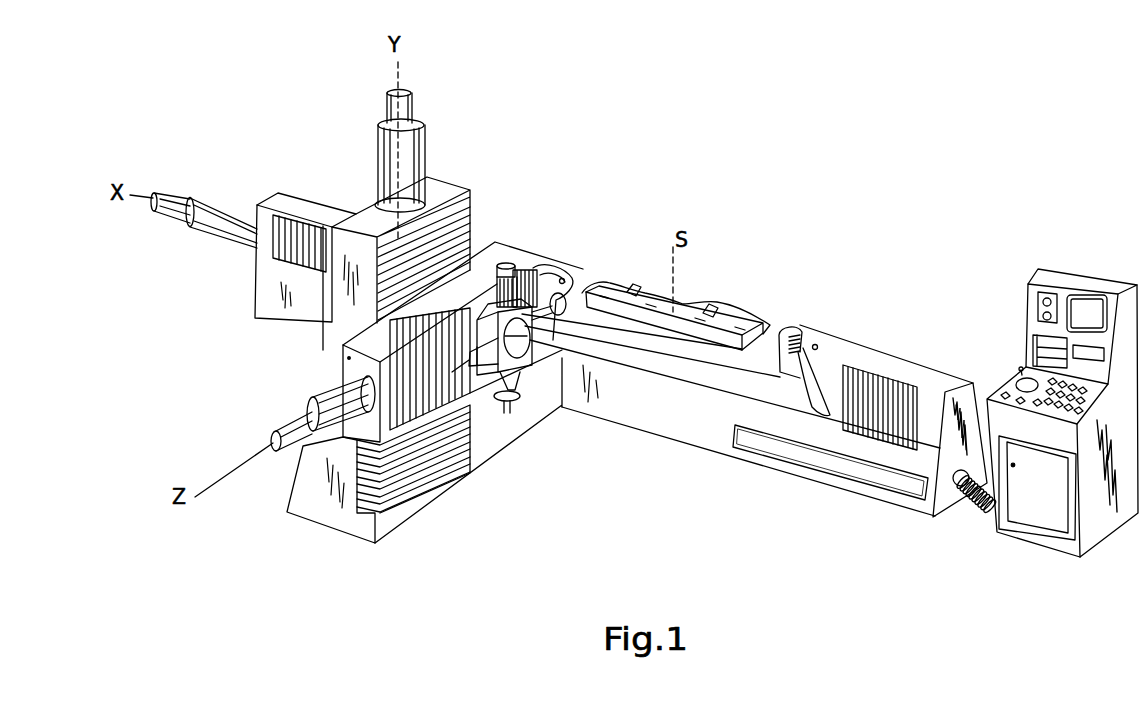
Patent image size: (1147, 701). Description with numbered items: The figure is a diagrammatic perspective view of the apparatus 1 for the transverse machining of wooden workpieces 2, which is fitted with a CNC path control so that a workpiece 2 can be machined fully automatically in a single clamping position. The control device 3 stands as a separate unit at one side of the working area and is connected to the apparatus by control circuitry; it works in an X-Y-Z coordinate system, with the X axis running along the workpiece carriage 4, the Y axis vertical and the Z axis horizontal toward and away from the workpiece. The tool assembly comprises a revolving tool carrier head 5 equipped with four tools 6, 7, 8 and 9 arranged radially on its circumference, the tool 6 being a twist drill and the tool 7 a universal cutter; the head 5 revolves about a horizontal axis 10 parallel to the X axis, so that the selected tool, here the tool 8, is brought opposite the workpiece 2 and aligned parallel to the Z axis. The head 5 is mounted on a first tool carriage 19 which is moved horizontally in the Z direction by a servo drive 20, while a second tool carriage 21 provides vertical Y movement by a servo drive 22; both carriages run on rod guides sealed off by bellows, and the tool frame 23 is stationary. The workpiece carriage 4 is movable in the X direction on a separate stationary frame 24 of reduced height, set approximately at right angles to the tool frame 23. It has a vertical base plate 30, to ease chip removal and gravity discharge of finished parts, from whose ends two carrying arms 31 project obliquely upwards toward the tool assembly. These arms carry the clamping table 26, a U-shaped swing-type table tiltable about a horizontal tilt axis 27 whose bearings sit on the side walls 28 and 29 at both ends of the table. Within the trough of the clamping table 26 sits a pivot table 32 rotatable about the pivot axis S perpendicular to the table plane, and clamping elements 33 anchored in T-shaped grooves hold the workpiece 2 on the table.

The apparatus 1 is at (645, 173).
The wooden workpiece 2 is at (683, 307).
The control device 3 is at (1063, 279).
The workpiece carriage 4 is at (693, 367).
The revolving tool carrier head 5 is at (520, 364).
The tool (twist drill) 6 is at (462, 372).
The tool (universal cutter) 7 is at (508, 412).
The tool 8 is at (578, 286).
The tool 9 is at (513, 262).
The horizontal axis 10 is at (565, 306).
The first tool carriage 19 is at (350, 363).
The servo drive 20 is at (330, 400).
The second tool carriage 21 is at (368, 317).
The servo drive 22 is at (388, 155).
The tool frame 23 is at (318, 512).
The frame 24 is at (728, 440).
The clamping table 26 is at (760, 350).
The tilt axis 27 is at (818, 347).
The side wall 28 is at (793, 333).
The side wall 29 is at (556, 272).
The vertical base plate 30 is at (724, 380).
The carrying arm 31 is at (566, 280).
The pivot table 32 is at (665, 318).
The clamping element 33 is at (630, 287).